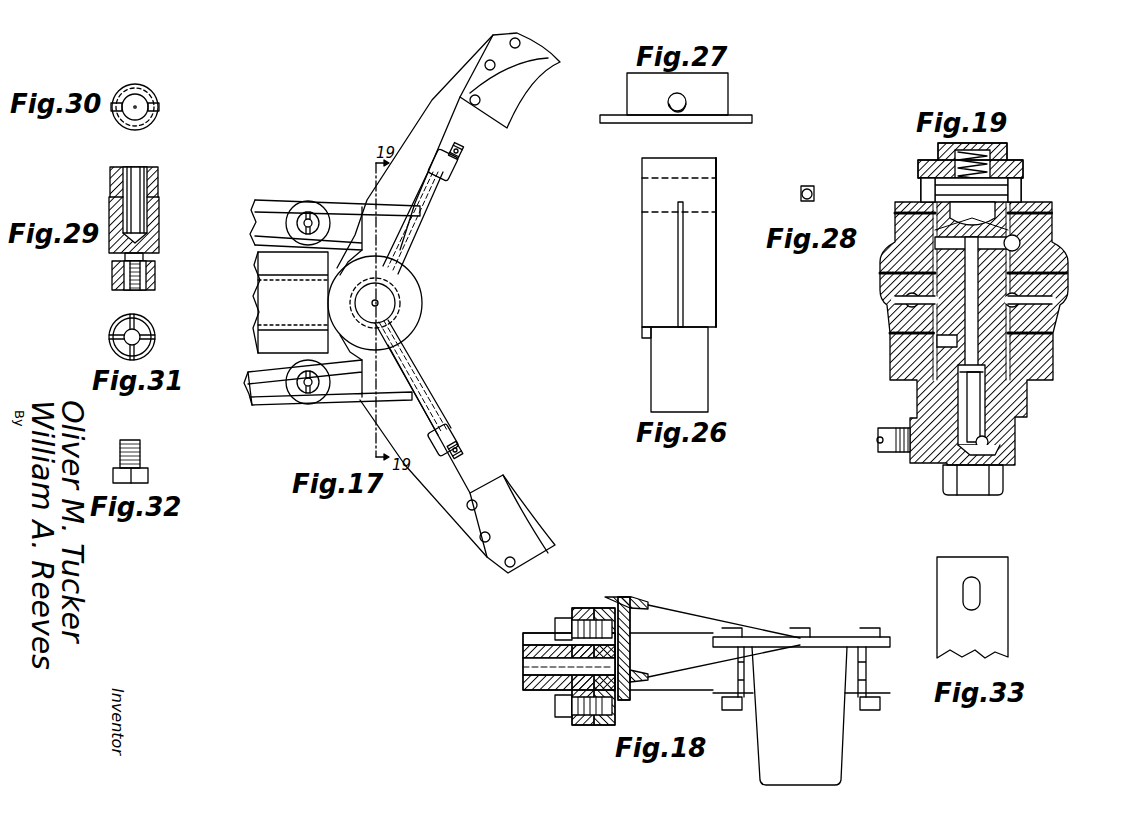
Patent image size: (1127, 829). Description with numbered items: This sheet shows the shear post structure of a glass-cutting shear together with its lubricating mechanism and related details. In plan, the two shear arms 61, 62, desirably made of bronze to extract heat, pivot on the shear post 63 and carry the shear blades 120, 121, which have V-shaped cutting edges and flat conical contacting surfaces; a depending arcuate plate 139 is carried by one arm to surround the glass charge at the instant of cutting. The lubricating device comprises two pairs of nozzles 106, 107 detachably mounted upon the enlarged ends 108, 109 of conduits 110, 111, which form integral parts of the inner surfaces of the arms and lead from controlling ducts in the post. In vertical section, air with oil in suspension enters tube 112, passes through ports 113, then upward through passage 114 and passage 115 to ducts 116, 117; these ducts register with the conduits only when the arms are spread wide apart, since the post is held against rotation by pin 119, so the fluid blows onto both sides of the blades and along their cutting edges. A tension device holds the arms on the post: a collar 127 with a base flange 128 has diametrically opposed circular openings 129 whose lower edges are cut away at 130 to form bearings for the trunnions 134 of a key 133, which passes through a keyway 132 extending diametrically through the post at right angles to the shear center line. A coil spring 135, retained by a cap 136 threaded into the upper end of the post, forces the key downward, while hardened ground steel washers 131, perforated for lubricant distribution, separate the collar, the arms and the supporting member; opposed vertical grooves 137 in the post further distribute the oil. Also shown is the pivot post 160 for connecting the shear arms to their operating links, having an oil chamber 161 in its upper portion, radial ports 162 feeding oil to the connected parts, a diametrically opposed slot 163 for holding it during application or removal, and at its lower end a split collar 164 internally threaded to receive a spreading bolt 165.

In FIG. 17, the shear arm 61 is at (442, 130).
In FIG. 19, the shear arm 61 is at (905, 262).
In FIG. 17, the shear arm 62 is at (447, 487).
In FIG. 19, the shear arm 62 is at (1062, 290).
In FIG. 17, the shear post 63 is at (388, 302).
In FIG. 26, the shear post 63 is at (700, 183).
In FIG. 19, the shear post 63 is at (1000, 355).
In FIG. 33, the shear post 63 is at (995, 630).
In FIG. 17, the nozzles 106 is at (465, 153).
In FIG. 18, the nozzles 106 is at (630, 605).
In FIG. 17, the nozzles 107 is at (464, 449).
In FIG. 17, the enlarged end 108 is at (452, 176).
In FIG. 18, the enlarged end 108 is at (582, 722).
In FIG. 17, the enlarged end 109 is at (447, 436).
In FIG. 17, the conduit 110 is at (405, 235).
In FIG. 19, the conduit 110 is at (1022, 243).
In FIG. 18, the conduit 110 is at (545, 667).
In FIG. 17, the conduit 111 is at (408, 362).
In FIG. 19, the conduit 111 is at (908, 312).
In FIG. 19, the tube 112 is at (900, 443).
In FIG. 19, the ports 113 is at (990, 442).
In FIG. 19, the passage 114 is at (978, 412).
In FIG. 19, the passage 115 is at (1054, 308).
In FIG. 19, the duct 116 is at (906, 299).
In FIG. 19, the duct 117 is at (1054, 222).
In FIG. 26, the pin 119 is at (644, 337).
In FIG. 19, the pin 119 is at (940, 352).
In FIG. 17, the shear blade 120 is at (486, 82).
In FIG. 17, the shear blade 121 is at (483, 516).
In FIG. 27, the collar 127 is at (720, 84).
In FIG. 19, the collar 127 is at (1023, 170).
In FIG. 19, the base flange 128 is at (1050, 204).
In FIG. 27, the openings 129 is at (676, 101).
In FIG. 19, the openings 129 is at (933, 182).
In FIG. 27, the cut-away portion 130 is at (681, 108).
In FIG. 19, the washers 131 is at (1053, 213).
In FIG. 19, the keyway 132 is at (1022, 186).
In FIG. 33, the keyway 132 is at (972, 590).
In FIG. 28, the key 133 is at (815, 194).
In FIG. 19, the key 133 is at (940, 196).
In FIG. 28, the trunnions 134 is at (800, 192).
In FIG. 19, the coil spring 135 is at (1000, 145).
In FIG. 19, the cap 136 is at (1003, 140).
In FIG. 26, the vertical grooves 137 is at (678, 270).
In FIG. 18, the arcuate plate 139 is at (826, 735).
In FIG. 30, the pivot post 160 is at (147, 95).
In FIG. 29, the pivot post 160 is at (159, 213).
In FIG. 30, the oil chamber 161 is at (143, 110).
In FIG. 29, the oil chamber 161 is at (137, 192).
In FIG. 29, the radial ports 162 is at (154, 197).
In FIG. 30, the slot 163 is at (159, 107).
In FIG. 29, the split collar 164 is at (146, 275).
In FIG. 32, the spreading bolt 165 is at (140, 458).